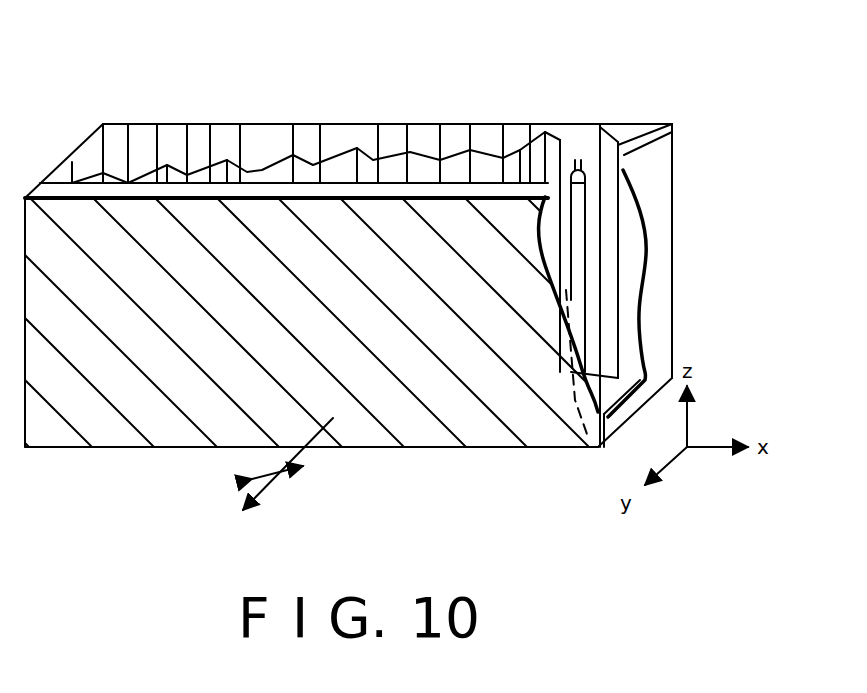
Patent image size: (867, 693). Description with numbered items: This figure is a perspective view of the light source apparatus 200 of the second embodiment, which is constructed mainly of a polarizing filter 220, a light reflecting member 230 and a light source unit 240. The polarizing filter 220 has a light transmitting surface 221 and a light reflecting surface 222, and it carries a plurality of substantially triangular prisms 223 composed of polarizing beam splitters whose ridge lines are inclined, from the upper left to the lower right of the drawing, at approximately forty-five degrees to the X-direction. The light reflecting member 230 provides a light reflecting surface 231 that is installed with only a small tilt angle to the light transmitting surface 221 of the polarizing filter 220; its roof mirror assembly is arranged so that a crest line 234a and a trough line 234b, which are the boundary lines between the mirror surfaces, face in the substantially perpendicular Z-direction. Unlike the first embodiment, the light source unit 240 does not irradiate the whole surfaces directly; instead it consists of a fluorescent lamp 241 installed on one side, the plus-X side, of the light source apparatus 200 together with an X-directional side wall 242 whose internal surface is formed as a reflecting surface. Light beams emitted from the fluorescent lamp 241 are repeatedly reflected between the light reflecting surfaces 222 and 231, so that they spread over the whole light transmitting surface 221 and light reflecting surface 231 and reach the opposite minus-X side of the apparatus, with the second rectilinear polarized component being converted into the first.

The light source apparatus 200 is at (405, 35).
The polarizing filter 220 is at (50, 430).
The light transmitting surface 221 is at (167, 422).
The light reflecting surface 222 is at (237, 323).
The prisms 223 is at (430, 437).
The light reflecting member 230 is at (147, 150).
The light reflecting surface 231 is at (344, 172).
The crest line 234a is at (435, 180).
The trough line 234b is at (437, 185).
The light source unit 240 is at (612, 205).
The fluorescent lamp 241 is at (578, 257).
The X-directional side wall 242 is at (657, 333).